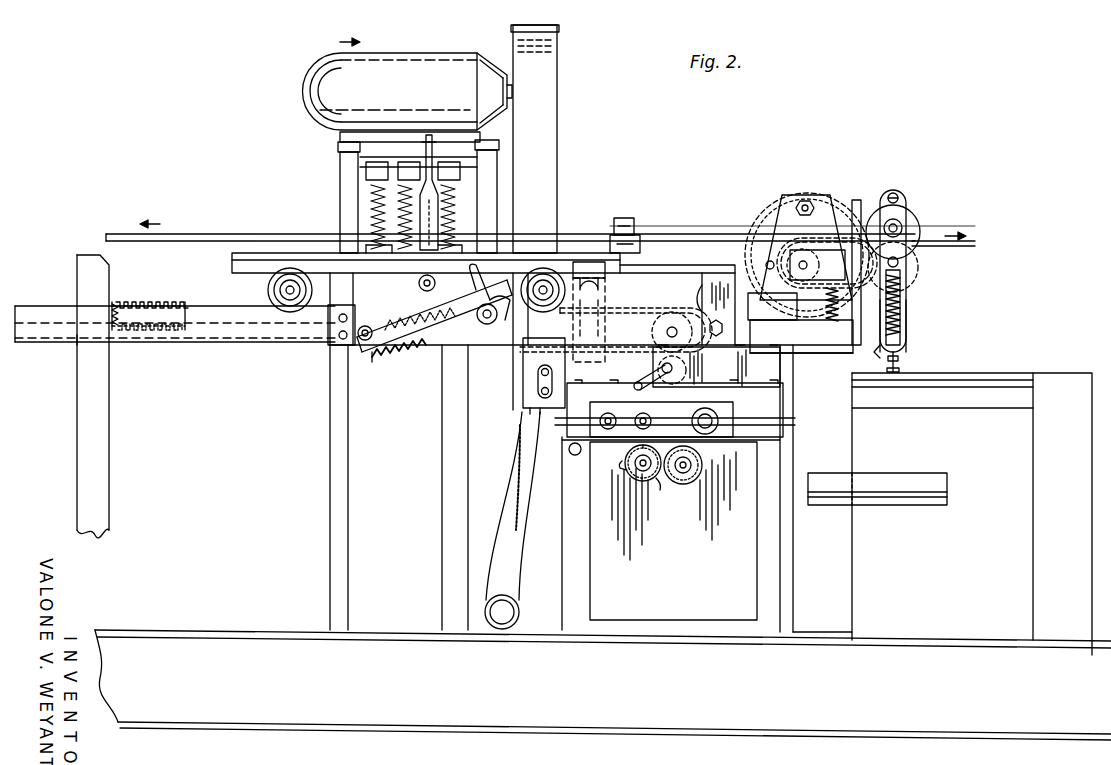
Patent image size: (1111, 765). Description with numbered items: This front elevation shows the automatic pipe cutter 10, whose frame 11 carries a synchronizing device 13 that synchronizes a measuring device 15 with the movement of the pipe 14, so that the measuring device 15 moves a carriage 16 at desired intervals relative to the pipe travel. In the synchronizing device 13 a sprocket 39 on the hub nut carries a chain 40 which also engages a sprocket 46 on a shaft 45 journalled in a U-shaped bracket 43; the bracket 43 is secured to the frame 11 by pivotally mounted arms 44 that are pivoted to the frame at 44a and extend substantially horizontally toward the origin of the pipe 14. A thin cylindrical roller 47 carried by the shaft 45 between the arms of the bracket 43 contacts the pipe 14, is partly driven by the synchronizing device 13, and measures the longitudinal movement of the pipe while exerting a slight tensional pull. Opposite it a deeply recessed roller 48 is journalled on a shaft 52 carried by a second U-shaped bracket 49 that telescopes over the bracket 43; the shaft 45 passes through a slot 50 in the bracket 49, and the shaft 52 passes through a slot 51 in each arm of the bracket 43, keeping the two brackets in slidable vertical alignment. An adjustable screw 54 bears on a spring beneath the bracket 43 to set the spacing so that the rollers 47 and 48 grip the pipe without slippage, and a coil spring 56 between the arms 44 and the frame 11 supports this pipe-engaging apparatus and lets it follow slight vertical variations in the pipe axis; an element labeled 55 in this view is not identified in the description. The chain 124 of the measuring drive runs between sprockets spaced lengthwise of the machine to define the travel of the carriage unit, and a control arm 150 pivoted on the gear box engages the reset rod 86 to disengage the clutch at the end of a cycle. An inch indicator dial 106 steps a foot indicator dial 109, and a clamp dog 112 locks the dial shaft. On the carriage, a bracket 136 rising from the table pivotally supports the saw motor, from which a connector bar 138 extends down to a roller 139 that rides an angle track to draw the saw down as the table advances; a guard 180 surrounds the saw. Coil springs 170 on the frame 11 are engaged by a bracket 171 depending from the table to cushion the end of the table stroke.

The pipe cutter 10 is at (322, 398).
The frame 11 is at (440, 457).
The synchronizing device 13 is at (800, 190).
The pipe 14 is at (686, 246).
The measuring device 15 is at (774, 450).
The carriage 16 is at (572, 222).
The sprocket 39 is at (790, 252).
The chain 40 is at (858, 240).
The U-shaped bracket 43 is at (906, 196).
The pivotally mounted arms 44 is at (836, 236).
The arm pivot 44a is at (783, 262).
The shaft 45 is at (904, 267).
The sprocket 46 is at (848, 322).
The thin cylindrical roller 47 is at (869, 354).
The deeply recessed roller 48 is at (918, 212).
The second U-shaped bracket 49 is at (906, 326).
The slot 50 is at (918, 243).
The slot 51 is at (896, 193).
The shaft 52 is at (902, 228).
The adjustable screw 54 is at (899, 364).
The spring 55 is at (902, 292).
The coil spring 56 is at (826, 300).
The reset rod 86 is at (688, 386).
The inch indicator dial 106 is at (697, 494).
The foot indicator dial 109 is at (702, 465).
The clamp dog 112 is at (628, 468).
The chain 124 is at (625, 310).
The bracket 136 is at (340, 178).
The connector bar 138 is at (436, 158).
The roller 139 is at (417, 284).
The control arm 150 is at (690, 365).
The coil springs 170 is at (130, 306).
The bracket 171 is at (316, 302).
The guard 180 is at (558, 96).